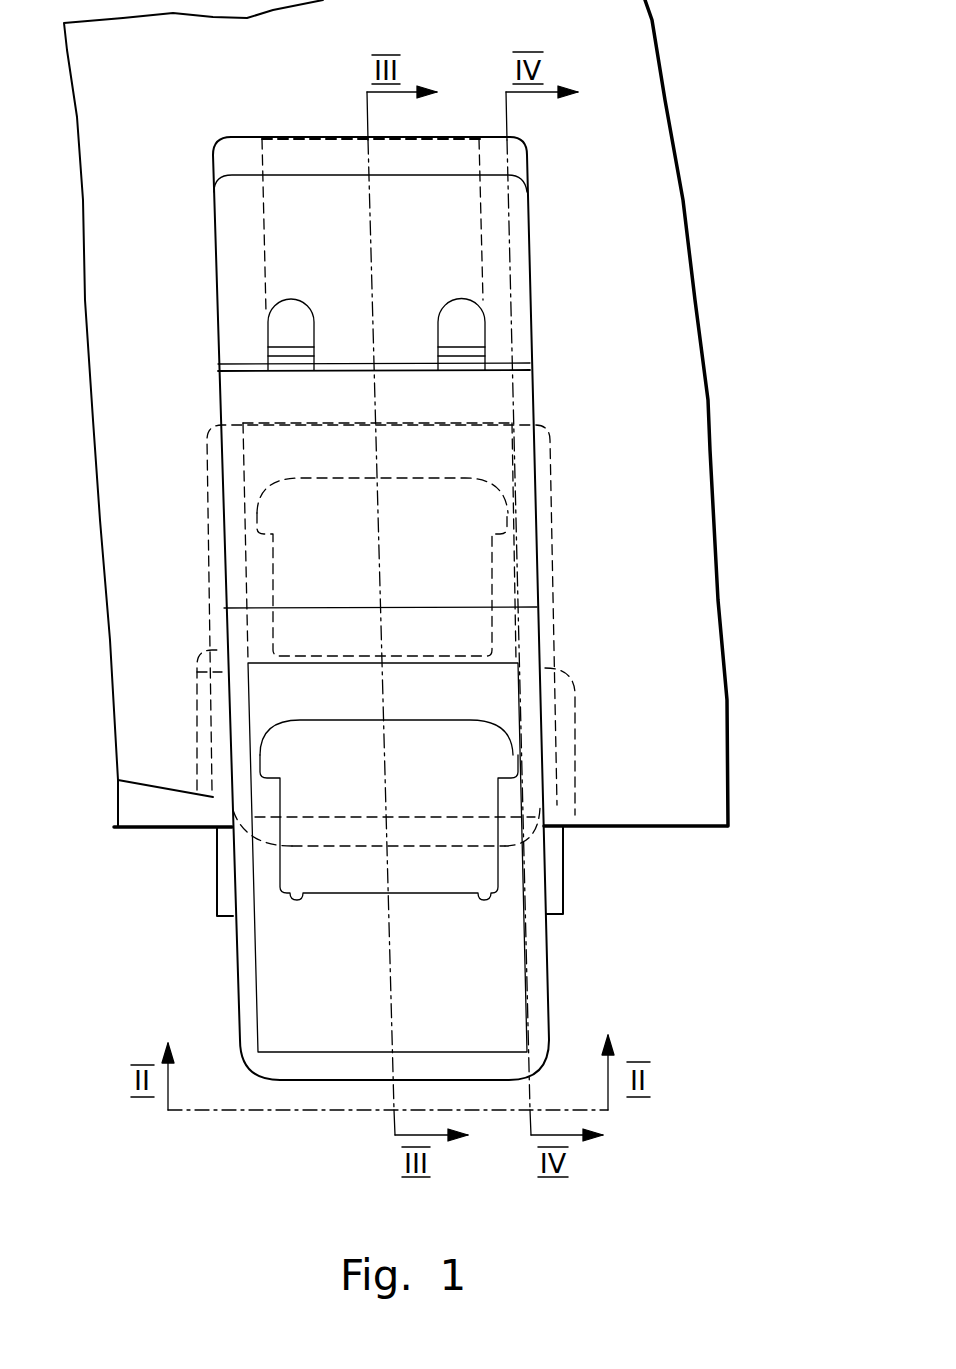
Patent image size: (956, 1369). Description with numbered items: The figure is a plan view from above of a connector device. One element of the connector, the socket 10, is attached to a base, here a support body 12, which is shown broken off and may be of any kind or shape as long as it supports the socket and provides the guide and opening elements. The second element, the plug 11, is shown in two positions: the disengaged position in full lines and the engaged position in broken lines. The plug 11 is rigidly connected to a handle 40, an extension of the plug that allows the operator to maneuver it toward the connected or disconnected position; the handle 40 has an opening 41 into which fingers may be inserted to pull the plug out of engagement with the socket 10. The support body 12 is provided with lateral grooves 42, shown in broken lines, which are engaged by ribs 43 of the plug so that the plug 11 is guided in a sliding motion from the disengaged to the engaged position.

The socket 10 is at (535, 282).
The plug 11 is at (483, 690).
The support body 12 is at (637, 317).
The handle 40 is at (302, 968).
The opening 41 is at (323, 773).
The lateral grooves 42 is at (222, 552).
The ribs 43 is at (222, 893).